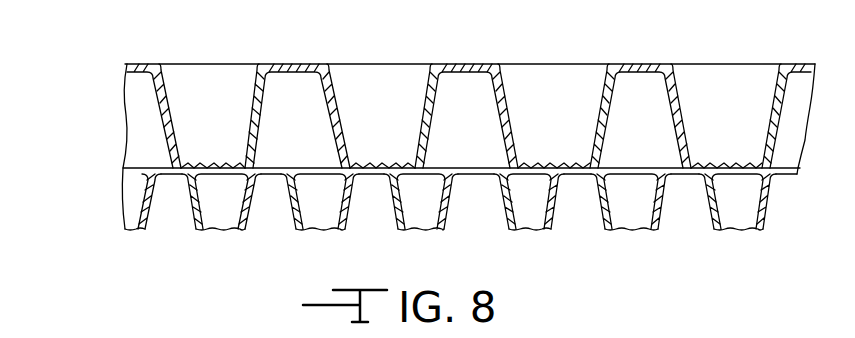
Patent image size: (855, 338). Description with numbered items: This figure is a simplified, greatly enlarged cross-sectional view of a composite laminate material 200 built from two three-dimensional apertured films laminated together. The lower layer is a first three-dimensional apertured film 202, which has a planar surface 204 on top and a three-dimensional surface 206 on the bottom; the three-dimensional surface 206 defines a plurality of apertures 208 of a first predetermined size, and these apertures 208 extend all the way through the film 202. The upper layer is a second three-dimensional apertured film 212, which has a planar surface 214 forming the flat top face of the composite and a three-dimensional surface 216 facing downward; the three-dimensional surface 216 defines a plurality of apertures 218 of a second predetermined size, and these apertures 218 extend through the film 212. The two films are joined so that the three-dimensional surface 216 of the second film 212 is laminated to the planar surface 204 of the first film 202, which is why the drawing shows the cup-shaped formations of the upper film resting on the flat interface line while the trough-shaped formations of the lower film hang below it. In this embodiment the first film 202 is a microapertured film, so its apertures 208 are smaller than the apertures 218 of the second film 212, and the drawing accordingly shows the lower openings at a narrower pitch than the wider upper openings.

The composite laminate material 200 is at (104, 137).
The first three-dimensional apertured film 202 is at (140, 202).
The planar surface 204 is at (165, 168).
The three-dimensional surface 206 is at (178, 173).
The apertures 208 is at (219, 207).
The second three-dimensional apertured film 212 is at (157, 110).
The planar surface 214 is at (147, 64).
The three-dimensional surface 216 is at (300, 73).
The apertures 218 is at (470, 127).